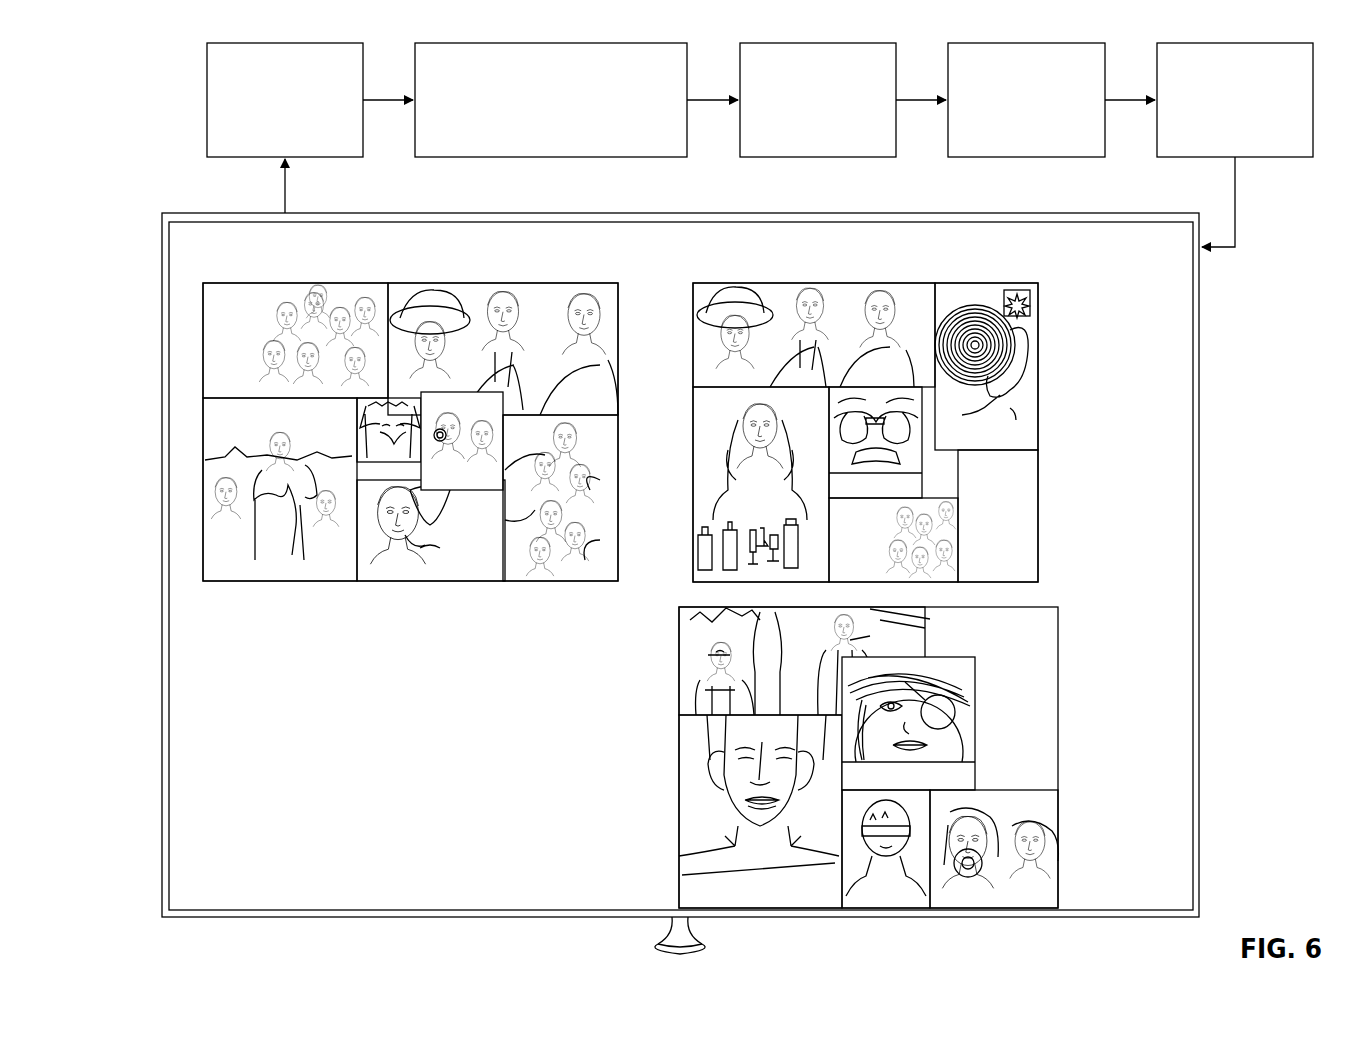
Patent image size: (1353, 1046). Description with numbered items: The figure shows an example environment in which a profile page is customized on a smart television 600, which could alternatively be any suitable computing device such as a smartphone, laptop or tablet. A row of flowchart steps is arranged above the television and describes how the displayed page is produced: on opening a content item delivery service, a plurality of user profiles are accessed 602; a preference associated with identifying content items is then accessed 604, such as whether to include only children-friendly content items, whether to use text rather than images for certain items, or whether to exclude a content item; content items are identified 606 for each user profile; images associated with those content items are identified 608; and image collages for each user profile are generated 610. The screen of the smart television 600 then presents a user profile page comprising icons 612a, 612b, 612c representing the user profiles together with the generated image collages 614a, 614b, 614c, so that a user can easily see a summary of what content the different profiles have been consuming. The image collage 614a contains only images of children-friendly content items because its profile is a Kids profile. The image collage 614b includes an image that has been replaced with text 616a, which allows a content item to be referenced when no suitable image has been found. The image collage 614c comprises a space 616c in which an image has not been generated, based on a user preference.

The smart television 600 is at (1200, 521).
The accessing a plurality of user profiles 602 is at (278, 158).
The accessing a preference associated with identifying content items 604 is at (486, 158).
The identifying content items 606 is at (811, 158).
The identifying images 608 is at (1019, 158).
The generating image collages 610 is at (1228, 158).
The icon representing a user profile 612a is at (357, 450).
The icon representing a user profile 612b is at (897, 388).
The icon representing a user profile 612c is at (963, 780).
The image collage 614a is at (243, 502).
The image collage 614b is at (1022, 403).
The image collage 614c is at (888, 902).
The text replacing an image 616a is at (1022, 473).
The space 616c is at (1020, 727).